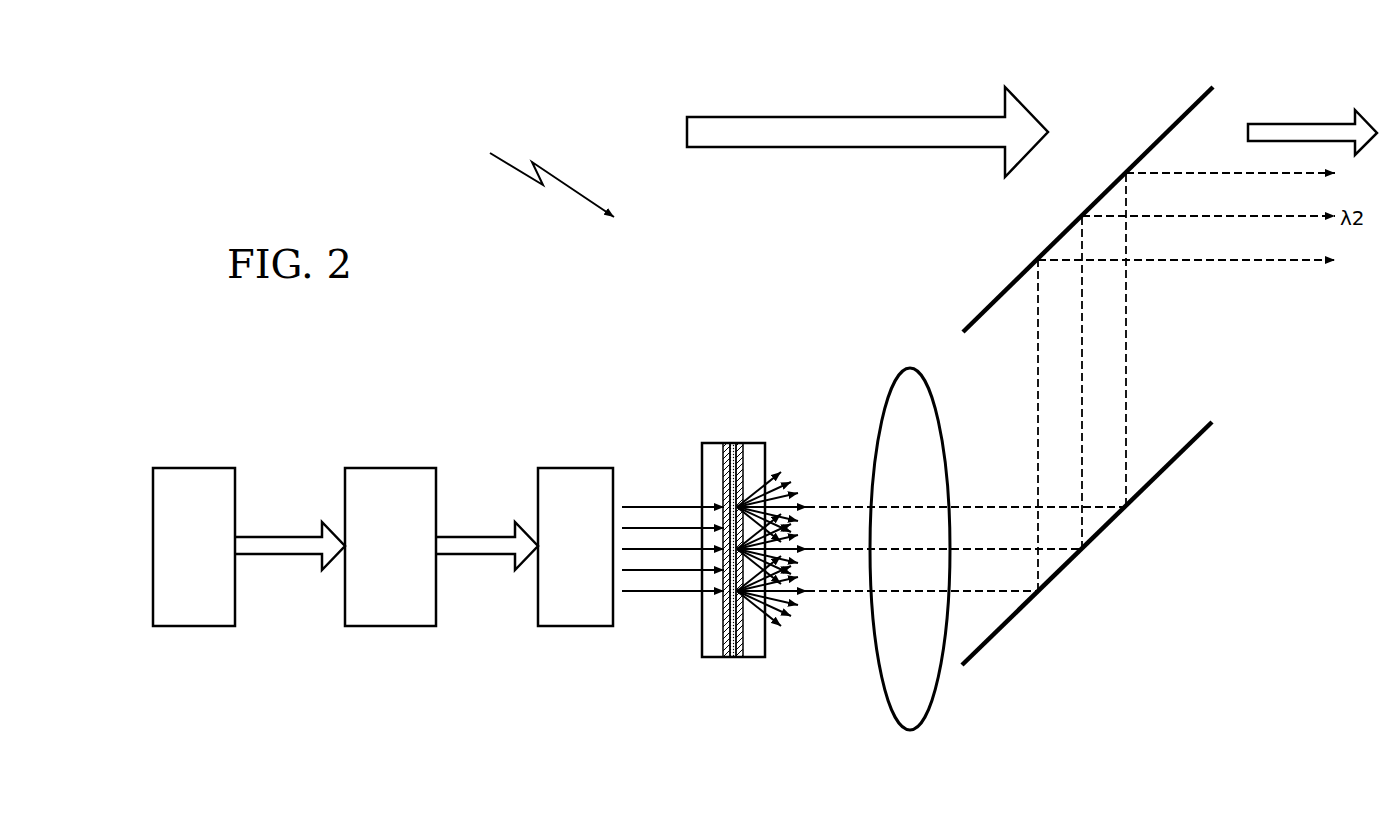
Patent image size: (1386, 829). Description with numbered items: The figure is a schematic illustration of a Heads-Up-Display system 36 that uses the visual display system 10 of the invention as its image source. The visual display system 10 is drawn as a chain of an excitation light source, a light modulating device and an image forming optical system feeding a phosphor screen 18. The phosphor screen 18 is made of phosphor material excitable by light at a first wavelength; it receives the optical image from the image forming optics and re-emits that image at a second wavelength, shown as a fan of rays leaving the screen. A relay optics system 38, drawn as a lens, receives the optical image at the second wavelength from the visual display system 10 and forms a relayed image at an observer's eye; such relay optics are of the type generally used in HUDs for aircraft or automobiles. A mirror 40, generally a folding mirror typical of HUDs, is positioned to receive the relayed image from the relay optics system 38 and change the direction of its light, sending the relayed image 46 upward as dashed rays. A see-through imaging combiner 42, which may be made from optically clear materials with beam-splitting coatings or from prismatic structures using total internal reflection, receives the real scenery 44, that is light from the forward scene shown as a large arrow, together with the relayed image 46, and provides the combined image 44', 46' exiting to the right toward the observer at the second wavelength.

The visual display system 10 is at (777, 416).
The phosphor screen 18 is at (691, 665).
The Heads-Up-Display system 36 is at (537, 172).
The relay optics system 38 is at (888, 712).
The mirror 40 is at (1185, 448).
The see-through imaging combiner 42 is at (1169, 128).
The real scenery 44 is at (867, 112).
The combined image (real scenery component) 44' is at (1312, 111).
The relayed image 46 is at (1130, 382).
The combined image (relayed image component) 46' is at (1186, 260).